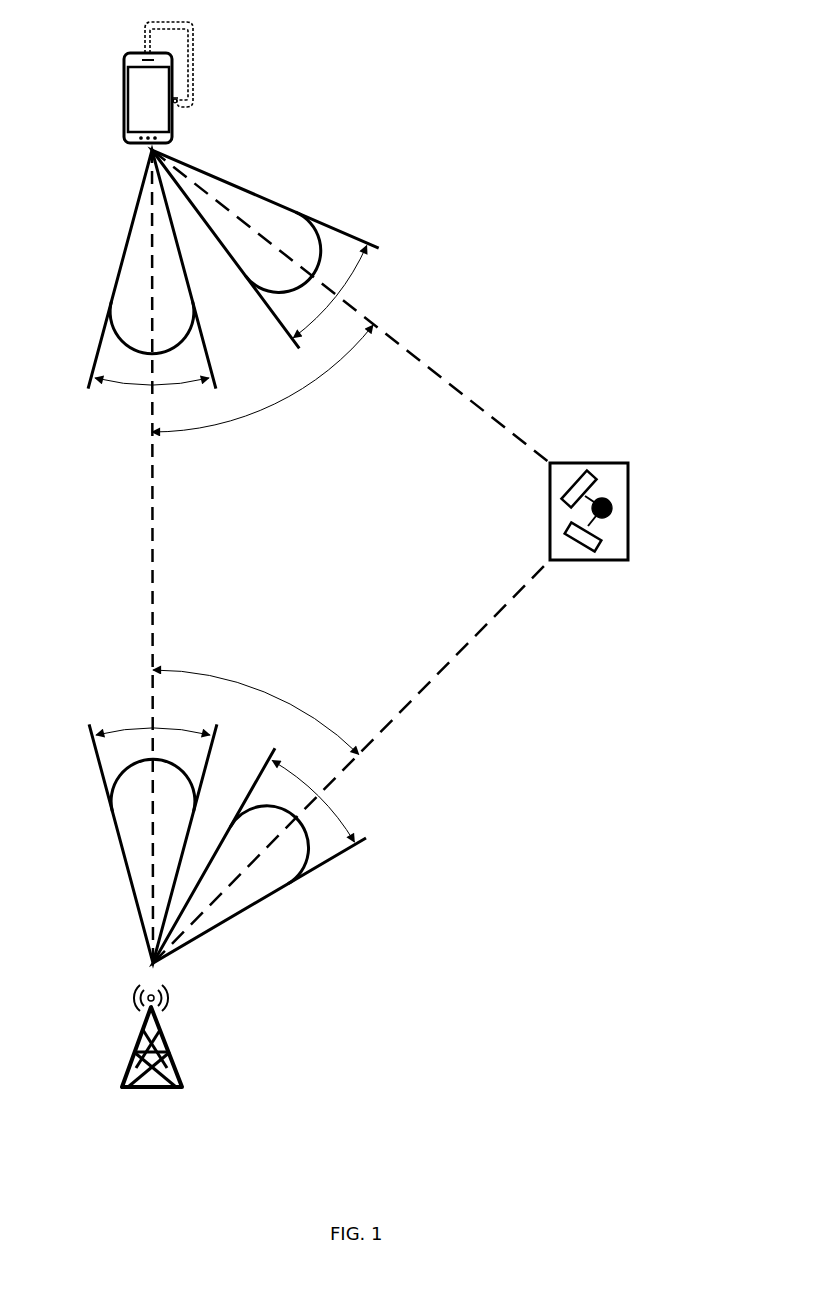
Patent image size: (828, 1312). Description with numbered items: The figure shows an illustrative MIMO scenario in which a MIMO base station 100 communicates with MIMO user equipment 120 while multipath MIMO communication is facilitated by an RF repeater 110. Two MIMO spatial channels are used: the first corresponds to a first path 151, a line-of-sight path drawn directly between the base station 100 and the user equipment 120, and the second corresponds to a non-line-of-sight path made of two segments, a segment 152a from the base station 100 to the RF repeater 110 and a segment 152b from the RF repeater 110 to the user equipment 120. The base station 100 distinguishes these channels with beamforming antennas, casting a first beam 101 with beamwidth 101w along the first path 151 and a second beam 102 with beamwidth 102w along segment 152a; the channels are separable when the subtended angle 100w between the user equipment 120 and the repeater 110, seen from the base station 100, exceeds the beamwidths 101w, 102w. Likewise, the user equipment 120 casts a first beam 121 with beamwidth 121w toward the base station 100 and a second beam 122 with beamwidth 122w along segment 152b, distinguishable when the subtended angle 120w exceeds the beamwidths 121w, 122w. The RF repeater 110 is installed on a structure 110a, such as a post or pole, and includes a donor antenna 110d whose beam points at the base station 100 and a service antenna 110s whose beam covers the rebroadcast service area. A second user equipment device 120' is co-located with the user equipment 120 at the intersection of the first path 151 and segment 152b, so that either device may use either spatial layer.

The MIMO base station 100 is at (173, 1036).
The subtended angle 100w is at (256, 704).
The first beam 101 is at (135, 833).
The beamwidth 101w is at (151, 720).
The second beam 102 is at (267, 880).
The beamwidth 102w is at (329, 802).
The RF repeater 110 is at (589, 498).
The structure 110a is at (613, 508).
The service antenna 110s is at (568, 482).
The donor antenna 110d is at (570, 540).
The MIMO user equipment 120 is at (130, 98).
The user equipment device 120' is at (150, 59).
The subtended angle 120w is at (262, 381).
The first beam 121 is at (138, 270).
The beamwidth 121w is at (151, 394).
The second beam 122 is at (267, 210).
The beamwidth 122w is at (350, 292).
The first path 151 is at (130, 556).
The segment of second path 152a is at (351, 761).
The segment of second path 152b is at (351, 306).